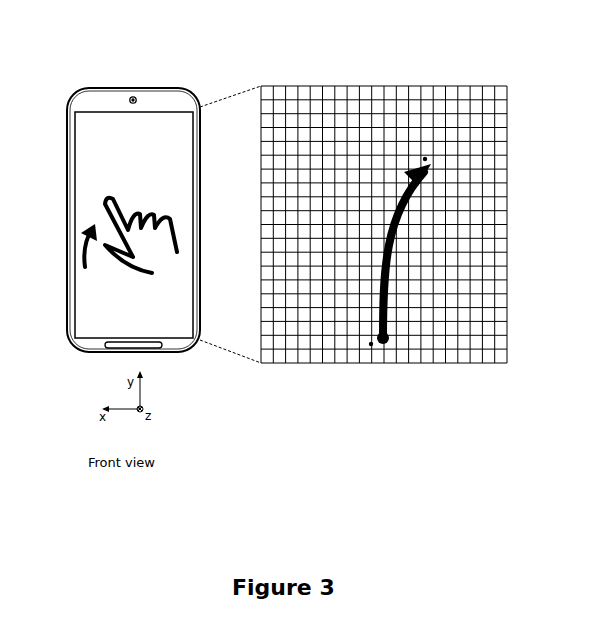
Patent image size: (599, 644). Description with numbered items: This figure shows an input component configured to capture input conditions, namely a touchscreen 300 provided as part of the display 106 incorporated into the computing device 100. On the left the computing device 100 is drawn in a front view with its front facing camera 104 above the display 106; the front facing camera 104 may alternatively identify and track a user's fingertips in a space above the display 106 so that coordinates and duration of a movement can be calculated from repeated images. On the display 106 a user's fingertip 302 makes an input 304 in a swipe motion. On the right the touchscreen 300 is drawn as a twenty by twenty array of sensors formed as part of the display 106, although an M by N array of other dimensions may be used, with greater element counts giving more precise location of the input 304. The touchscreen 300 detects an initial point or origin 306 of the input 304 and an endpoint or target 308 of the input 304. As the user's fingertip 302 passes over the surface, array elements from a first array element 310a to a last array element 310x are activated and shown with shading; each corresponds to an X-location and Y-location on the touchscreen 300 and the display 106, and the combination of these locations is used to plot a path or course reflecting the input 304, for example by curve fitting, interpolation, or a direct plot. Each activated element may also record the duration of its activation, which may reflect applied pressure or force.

The computing device 100 is at (195, 62).
The front facing camera 104 is at (134, 96).
The display 106 is at (77, 348).
The touchscreen 300 is at (500, 397).
The user's fingertip 302 is at (141, 235).
The input 304 is at (87, 252).
The origin 306 is at (386, 346).
The target 308 is at (429, 175).
The array element 310a is at (371, 344).
The array element 310x is at (428, 157).